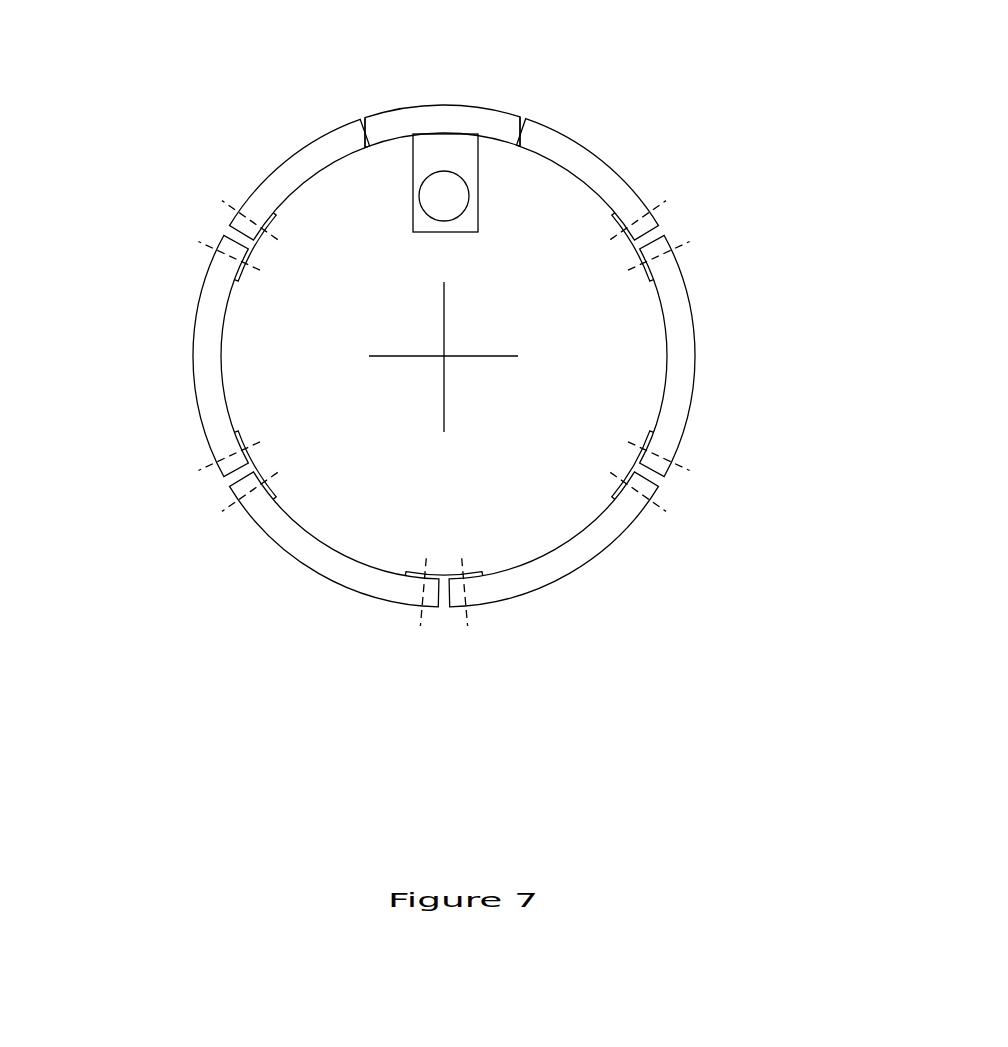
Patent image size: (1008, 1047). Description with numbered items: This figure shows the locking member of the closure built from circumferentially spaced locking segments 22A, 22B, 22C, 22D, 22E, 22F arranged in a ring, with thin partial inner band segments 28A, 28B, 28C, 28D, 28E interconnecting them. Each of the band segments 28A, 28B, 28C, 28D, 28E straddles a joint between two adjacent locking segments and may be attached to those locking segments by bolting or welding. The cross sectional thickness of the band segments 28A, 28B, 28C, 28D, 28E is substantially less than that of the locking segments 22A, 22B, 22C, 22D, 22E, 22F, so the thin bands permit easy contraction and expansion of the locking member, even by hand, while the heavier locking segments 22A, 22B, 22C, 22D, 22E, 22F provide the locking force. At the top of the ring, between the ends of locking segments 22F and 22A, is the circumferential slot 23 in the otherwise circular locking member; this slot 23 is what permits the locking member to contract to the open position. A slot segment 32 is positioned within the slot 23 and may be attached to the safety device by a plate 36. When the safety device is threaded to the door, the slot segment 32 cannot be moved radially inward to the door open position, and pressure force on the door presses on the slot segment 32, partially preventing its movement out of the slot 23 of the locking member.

The locking segment 22A is at (617, 147).
The locking segment 22B is at (758, 356).
The locking segment 22C is at (623, 544).
The locking segment 22D is at (298, 565).
The locking segment 22E is at (143, 356).
The locking segment 22F is at (264, 179).
The partial inner band segment 28A is at (722, 225).
The partial inner band segment 28B is at (742, 484).
The partial inner band segment 28C is at (484, 644).
The partial inner band segment 28D is at (159, 486).
The partial inner band segment 28E is at (158, 227).
The slot segment 32 is at (476, 81).
The plate 36 is at (420, 123).
The circumferential slot 23 is at (440, 191).